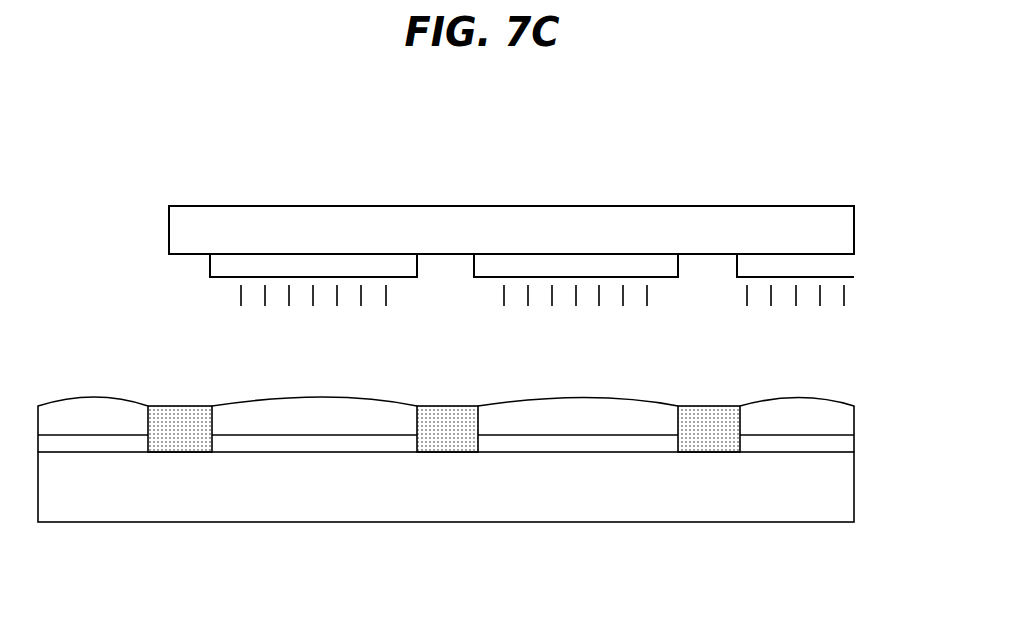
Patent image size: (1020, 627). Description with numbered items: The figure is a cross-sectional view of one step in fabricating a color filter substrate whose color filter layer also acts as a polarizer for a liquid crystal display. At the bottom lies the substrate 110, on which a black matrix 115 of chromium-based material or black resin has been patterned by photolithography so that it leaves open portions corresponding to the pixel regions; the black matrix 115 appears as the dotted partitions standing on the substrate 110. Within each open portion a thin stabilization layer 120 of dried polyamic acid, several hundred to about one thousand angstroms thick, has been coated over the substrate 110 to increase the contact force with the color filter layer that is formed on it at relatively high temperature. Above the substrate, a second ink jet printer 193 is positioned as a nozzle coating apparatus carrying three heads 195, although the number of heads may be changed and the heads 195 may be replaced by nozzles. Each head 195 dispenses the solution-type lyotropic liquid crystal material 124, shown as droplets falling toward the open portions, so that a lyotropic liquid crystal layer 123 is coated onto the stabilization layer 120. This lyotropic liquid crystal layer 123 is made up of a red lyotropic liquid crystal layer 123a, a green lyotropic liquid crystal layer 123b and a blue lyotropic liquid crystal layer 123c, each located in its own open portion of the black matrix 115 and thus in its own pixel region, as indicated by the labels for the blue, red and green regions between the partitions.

The substrate 110 is at (610, 500).
The black matrix 115 is at (173, 420).
The stabilization layer 120 is at (365, 445).
The lyotropic liquid crystal layer 123 is at (446, 462).
The red lyotropic liquid crystal layer 123a is at (270, 420).
The green lyotropic liquid crystal layer 123b is at (531, 422).
The blue lyotropic liquid crystal layer 123c is at (57, 420).
The lyotropic liquid crystal material 124 is at (845, 300).
The second ink jet printer 193 is at (766, 230).
The heads 195 is at (840, 271).